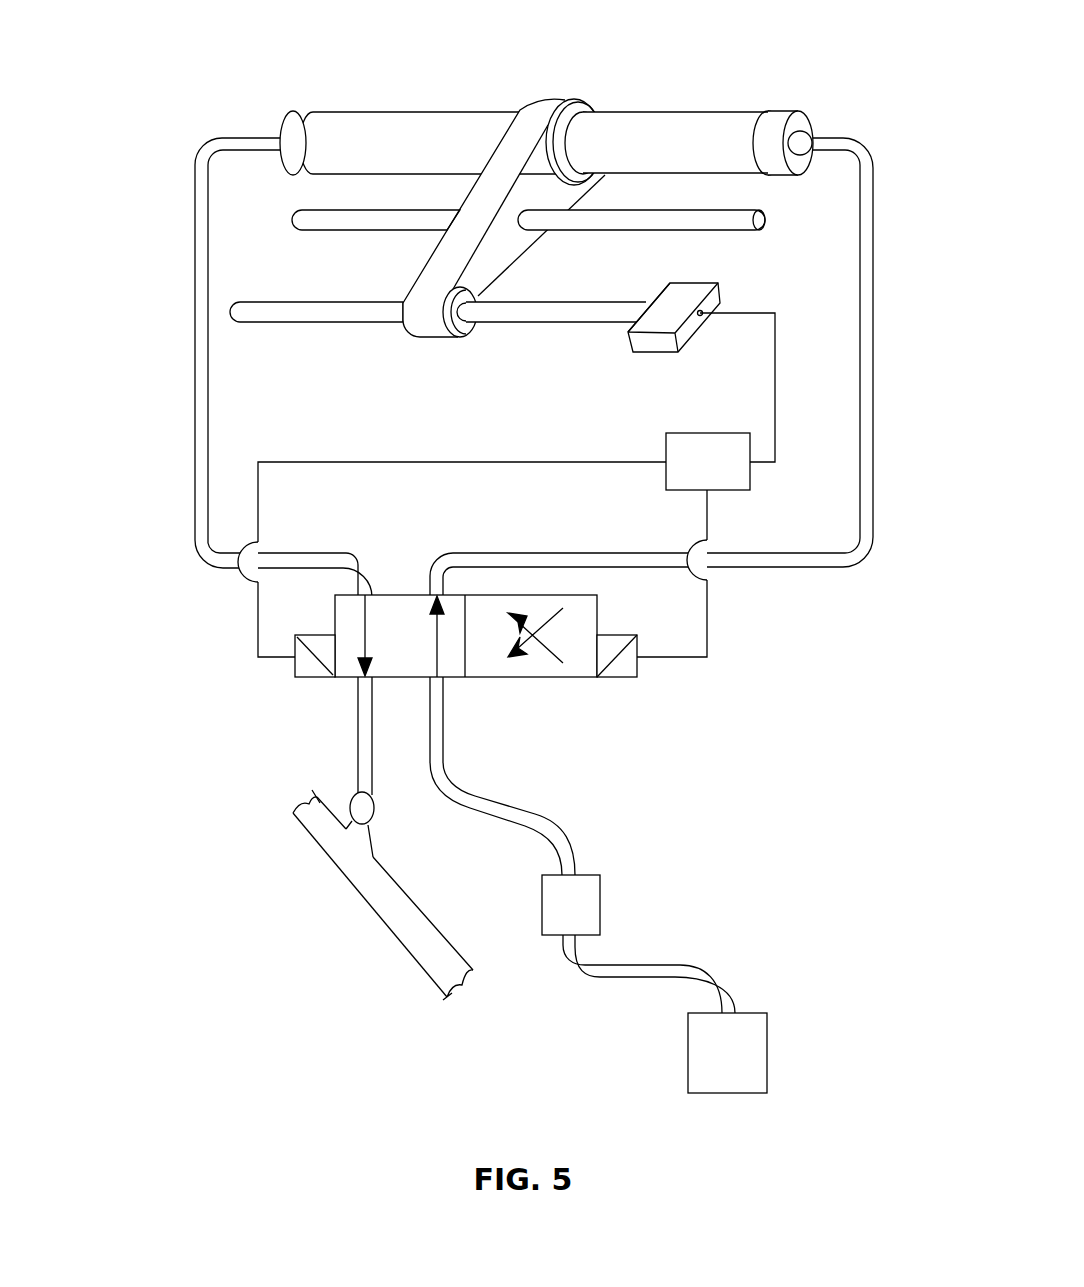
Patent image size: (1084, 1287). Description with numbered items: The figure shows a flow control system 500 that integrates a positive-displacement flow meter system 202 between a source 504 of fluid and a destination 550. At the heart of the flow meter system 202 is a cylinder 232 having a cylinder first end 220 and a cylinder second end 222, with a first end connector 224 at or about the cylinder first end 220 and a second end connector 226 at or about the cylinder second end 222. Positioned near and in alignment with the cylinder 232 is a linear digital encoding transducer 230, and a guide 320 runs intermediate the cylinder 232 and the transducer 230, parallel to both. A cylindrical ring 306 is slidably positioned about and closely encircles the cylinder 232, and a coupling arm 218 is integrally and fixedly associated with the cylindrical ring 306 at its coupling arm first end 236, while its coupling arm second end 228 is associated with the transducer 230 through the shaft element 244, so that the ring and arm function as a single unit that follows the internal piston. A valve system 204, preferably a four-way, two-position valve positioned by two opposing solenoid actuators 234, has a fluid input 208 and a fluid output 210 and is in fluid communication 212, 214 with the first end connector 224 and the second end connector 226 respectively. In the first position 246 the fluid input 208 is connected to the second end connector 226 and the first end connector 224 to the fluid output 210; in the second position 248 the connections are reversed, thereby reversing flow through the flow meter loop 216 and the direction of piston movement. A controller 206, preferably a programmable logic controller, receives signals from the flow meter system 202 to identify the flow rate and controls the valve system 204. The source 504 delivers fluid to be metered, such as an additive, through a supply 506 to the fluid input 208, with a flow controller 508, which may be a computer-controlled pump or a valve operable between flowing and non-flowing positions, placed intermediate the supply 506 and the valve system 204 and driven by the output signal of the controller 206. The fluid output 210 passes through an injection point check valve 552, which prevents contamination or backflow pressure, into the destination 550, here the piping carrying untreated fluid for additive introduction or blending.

The positive-displacement flow meter system 202 is at (701, 64).
The valve system 204 is at (652, 712).
The controller 206 is at (730, 492).
The fluid input 208 is at (448, 725).
The fluid output 210 is at (357, 725).
The fluid communication 212 is at (195, 536).
The fluid communication 214 is at (873, 527).
The flow meter loop 216 is at (195, 293).
The coupling arm 218 is at (475, 212).
The cylinder first end 220 is at (335, 118).
The cylinder second end 222 is at (758, 117).
The first end connector 224 is at (296, 120).
The second end connector 226 is at (806, 125).
The coupling arm second end 228 is at (425, 285).
The linear digital encoding transducer 230 is at (690, 290).
The cylinder 232 is at (668, 113).
The actuator 234 is at (293, 663).
The coupling arm first end 236 is at (555, 102).
The driven pulley shaft 244 is at (472, 337).
The first position 246 is at (407, 593).
The second position 248 is at (525, 677).
The cylindrical ring 306 is at (597, 108).
The guide 320 is at (650, 212).
The flow control system 500 is at (789, 663).
The source 504 is at (770, 1055).
The supply 506 is at (750, 1012).
The flow controller 508 is at (605, 905).
The destination 550 is at (360, 865).
The injection point check valve 552 is at (378, 816).